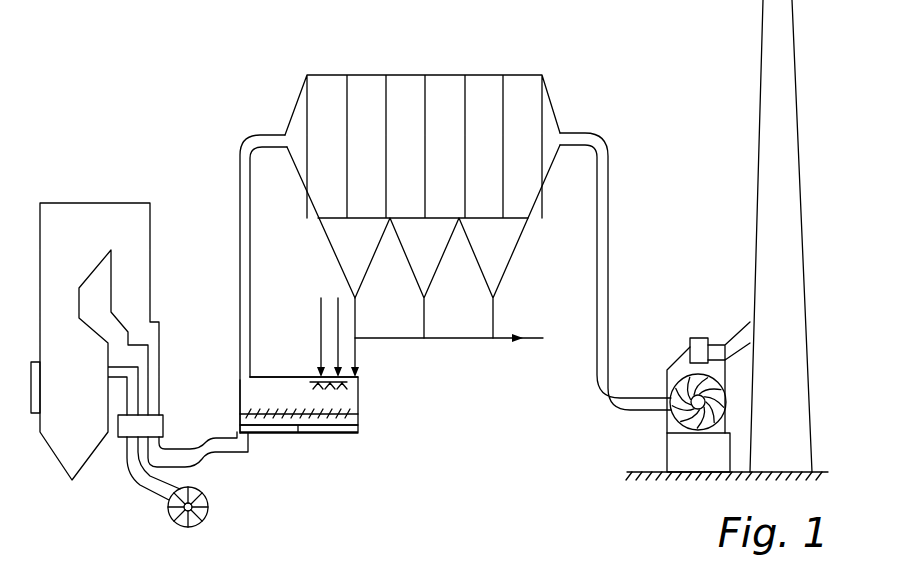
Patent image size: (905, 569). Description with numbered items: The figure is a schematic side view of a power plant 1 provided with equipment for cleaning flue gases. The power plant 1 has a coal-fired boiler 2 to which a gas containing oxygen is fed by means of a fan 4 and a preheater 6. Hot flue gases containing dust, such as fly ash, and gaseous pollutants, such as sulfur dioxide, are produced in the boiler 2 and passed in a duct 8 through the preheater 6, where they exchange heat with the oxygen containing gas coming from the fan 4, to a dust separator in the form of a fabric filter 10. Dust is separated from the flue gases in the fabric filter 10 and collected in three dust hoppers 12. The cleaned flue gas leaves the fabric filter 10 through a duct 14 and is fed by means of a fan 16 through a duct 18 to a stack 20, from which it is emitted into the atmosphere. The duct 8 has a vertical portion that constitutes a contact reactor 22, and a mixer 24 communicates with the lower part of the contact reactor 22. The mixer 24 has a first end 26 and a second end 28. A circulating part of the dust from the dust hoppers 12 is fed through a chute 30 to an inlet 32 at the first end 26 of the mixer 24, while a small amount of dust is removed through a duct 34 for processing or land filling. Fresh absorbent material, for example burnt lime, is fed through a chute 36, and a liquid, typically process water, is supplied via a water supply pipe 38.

The power plant 1 is at (188, 61).
The coal-fired boiler 2 is at (83, 205).
The fan 4 is at (170, 512).
The preheater 6 is at (130, 430).
The duct 8 is at (172, 458).
The fabric filter 10 is at (453, 90).
The dust hoppers 12 is at (345, 247).
The duct 14 is at (608, 243).
The fan 16 is at (680, 420).
The duct 18 is at (712, 345).
The stack 20 is at (758, 135).
The contact reactor 22 is at (245, 243).
The mixer 24 is at (285, 370).
The first end 26 is at (332, 397).
The second end 28 is at (247, 397).
The chute 30 is at (358, 350).
The inlet 32 is at (360, 368).
The duct 34 is at (535, 341).
The chute 36 is at (340, 320).
The water supply pipe 38 is at (319, 328).